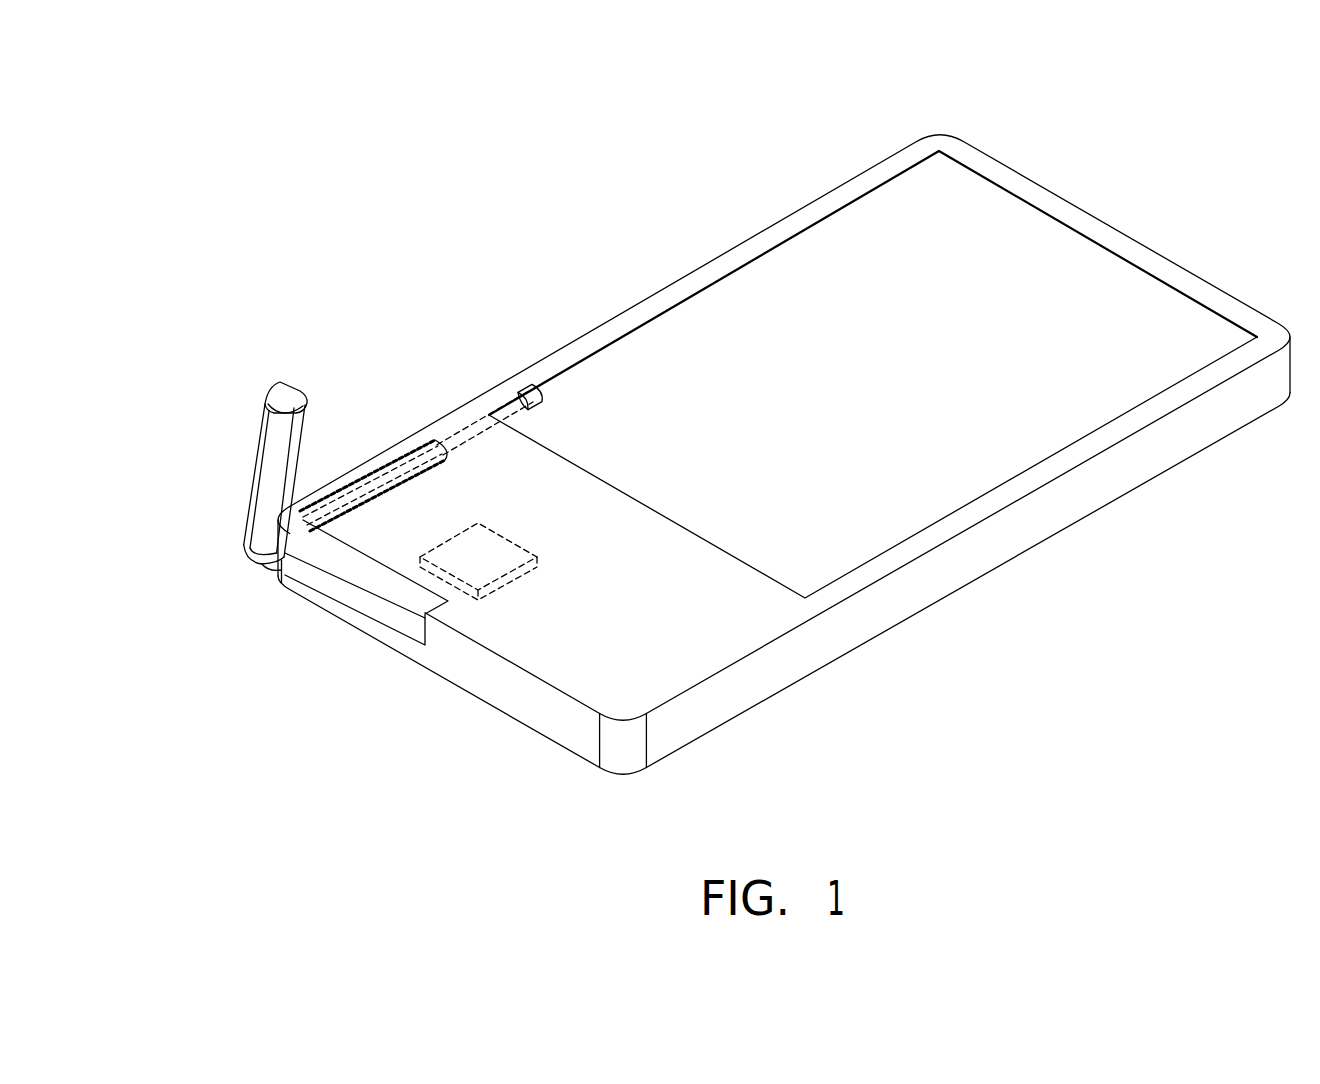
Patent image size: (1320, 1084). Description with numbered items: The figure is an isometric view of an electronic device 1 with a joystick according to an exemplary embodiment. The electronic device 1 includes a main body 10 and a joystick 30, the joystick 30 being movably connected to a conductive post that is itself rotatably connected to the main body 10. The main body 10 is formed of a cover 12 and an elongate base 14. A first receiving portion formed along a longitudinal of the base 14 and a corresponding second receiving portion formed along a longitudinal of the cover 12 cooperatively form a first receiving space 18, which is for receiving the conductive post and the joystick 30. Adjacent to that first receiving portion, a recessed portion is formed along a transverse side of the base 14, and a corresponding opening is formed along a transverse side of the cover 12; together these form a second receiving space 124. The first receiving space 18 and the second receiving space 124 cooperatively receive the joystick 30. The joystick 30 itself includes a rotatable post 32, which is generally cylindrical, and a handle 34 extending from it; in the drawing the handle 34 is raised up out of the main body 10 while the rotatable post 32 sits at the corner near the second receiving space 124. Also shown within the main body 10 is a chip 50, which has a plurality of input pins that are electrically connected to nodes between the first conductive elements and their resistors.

The electronic device 1 is at (767, 95).
The main body 10 is at (876, 750).
The cover 12 is at (710, 632).
The elongate base 14 is at (847, 655).
The first receiving space 18 is at (388, 458).
The joystick 30 is at (168, 537).
The rotatable post 32 is at (278, 567).
The handle 34 is at (262, 527).
The chip 50 is at (472, 562).
The second receiving space 124 is at (363, 597).